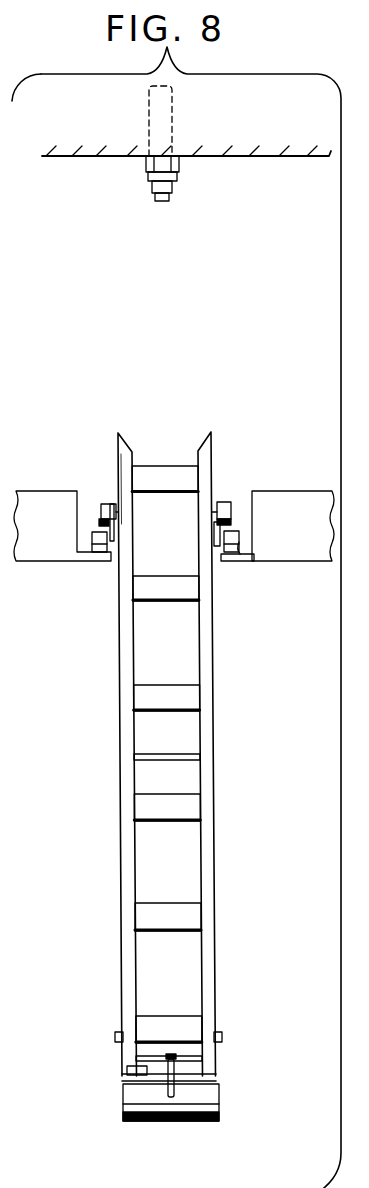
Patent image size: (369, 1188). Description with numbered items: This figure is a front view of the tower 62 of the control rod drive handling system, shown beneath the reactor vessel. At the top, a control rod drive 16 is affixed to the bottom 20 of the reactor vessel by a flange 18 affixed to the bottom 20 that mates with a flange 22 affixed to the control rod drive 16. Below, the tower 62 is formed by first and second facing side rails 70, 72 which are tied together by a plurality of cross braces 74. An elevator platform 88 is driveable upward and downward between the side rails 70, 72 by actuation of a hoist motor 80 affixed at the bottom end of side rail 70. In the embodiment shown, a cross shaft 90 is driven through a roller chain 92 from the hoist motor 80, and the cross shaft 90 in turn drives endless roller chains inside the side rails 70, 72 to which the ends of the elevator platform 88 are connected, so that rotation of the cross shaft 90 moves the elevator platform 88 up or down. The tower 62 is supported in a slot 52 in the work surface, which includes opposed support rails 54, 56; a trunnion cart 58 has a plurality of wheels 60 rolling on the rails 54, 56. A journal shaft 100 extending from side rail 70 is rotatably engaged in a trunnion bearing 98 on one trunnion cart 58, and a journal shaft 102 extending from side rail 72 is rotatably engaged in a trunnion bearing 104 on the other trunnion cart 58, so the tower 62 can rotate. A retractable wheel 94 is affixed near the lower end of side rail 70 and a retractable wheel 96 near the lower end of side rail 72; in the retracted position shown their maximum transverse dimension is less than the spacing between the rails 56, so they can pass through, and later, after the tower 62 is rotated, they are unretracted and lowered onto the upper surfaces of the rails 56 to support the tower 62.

The control rod drive 16 is at (147, 128).
The flange 18 is at (173, 155).
The bottom 20 is at (281, 154).
The flange 22 is at (174, 180).
The slot 52 is at (266, 503).
The support rail 54 is at (303, 485).
The support rail 56 is at (229, 557).
The trunnion cart 58 is at (232, 527).
The wheels 60 is at (233, 538).
The tower 62 is at (184, 776).
The side rail 70 is at (115, 674).
The side rail 72 is at (209, 658).
The cross braces 74 is at (187, 691).
The hoist motor 80 is at (213, 1104).
The elevator platform 88 is at (136, 753).
The cross shaft 90 is at (189, 1052).
The roller chain 92 is at (143, 1063).
The retractable wheel 94 is at (110, 1032).
The retractable wheel 96 is at (219, 1033).
The trunnion bearing 98 is at (96, 502).
The journal shaft 100 is at (110, 502).
The journal shaft 102 is at (213, 497).
The trunnion bearing 104 is at (226, 520).